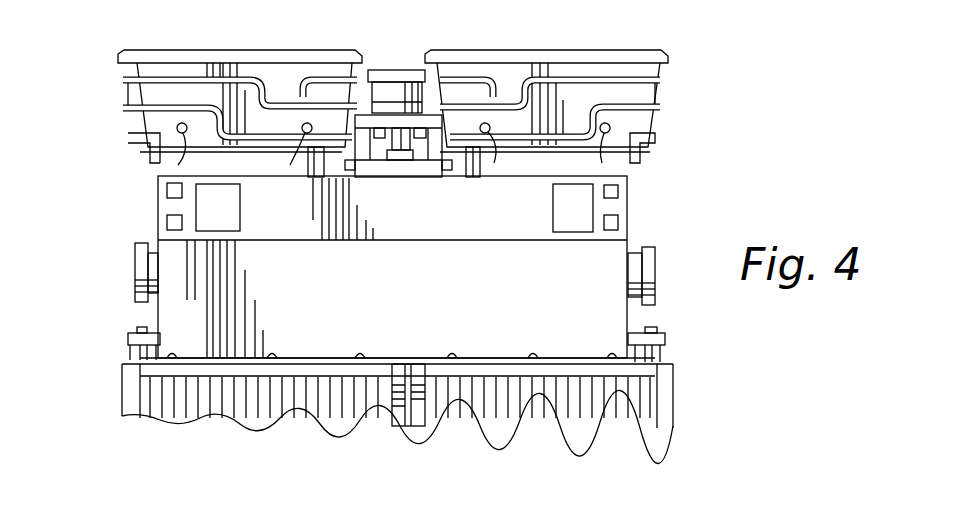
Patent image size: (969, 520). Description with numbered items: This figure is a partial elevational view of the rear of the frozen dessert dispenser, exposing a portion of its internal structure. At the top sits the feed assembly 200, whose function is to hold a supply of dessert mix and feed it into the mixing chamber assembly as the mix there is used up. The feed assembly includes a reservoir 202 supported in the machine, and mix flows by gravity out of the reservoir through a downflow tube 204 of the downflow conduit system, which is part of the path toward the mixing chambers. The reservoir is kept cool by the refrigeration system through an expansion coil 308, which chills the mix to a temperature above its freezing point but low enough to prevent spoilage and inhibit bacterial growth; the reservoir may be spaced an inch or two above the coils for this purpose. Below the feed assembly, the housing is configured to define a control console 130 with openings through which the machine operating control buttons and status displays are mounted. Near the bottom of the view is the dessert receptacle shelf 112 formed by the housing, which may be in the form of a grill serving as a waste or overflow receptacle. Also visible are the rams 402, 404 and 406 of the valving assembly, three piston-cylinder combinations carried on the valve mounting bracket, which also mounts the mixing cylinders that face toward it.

The dessert receptacle shelf 112 is at (328, 352).
The control console 130 is at (627, 213).
The feed assembly 200 is at (443, 100).
The reservoir 202 is at (653, 122).
The downflow tube 204 is at (494, 176).
The expansion coil 308 is at (663, 107).
The ram 402 is at (380, 70).
The ram 404 is at (137, 281).
The ram 406 is at (655, 292).